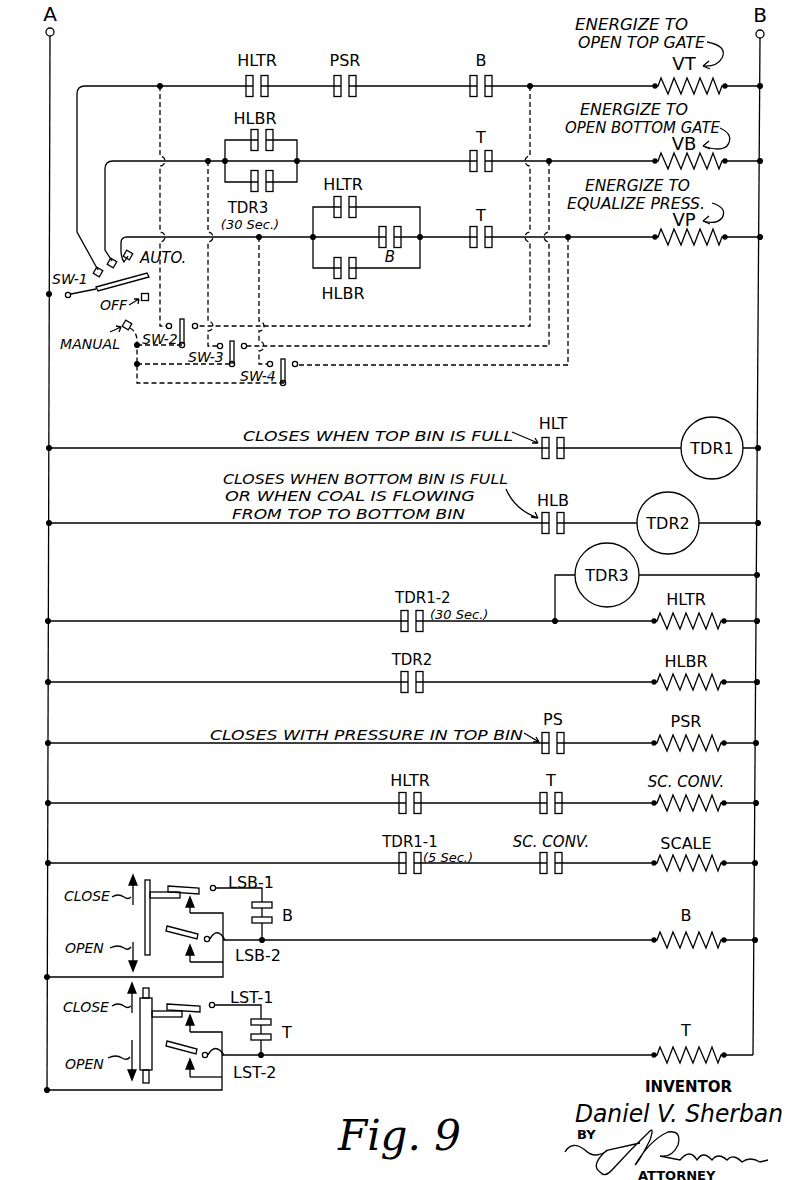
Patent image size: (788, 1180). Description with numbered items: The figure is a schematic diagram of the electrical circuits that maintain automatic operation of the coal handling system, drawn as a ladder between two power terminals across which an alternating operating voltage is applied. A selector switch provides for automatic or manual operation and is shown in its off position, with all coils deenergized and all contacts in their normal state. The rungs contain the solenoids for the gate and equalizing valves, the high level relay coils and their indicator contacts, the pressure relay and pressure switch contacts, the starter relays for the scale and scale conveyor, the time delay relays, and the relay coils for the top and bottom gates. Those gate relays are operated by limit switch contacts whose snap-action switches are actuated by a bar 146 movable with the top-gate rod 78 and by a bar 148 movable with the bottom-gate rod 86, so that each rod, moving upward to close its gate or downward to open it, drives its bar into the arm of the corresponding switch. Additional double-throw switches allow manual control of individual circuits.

The top-gate rod 78 is at (140, 1030).
The bottom-gate rod 86 is at (145, 918).
The bar 146 is at (157, 1005).
The bar 148 is at (158, 888).